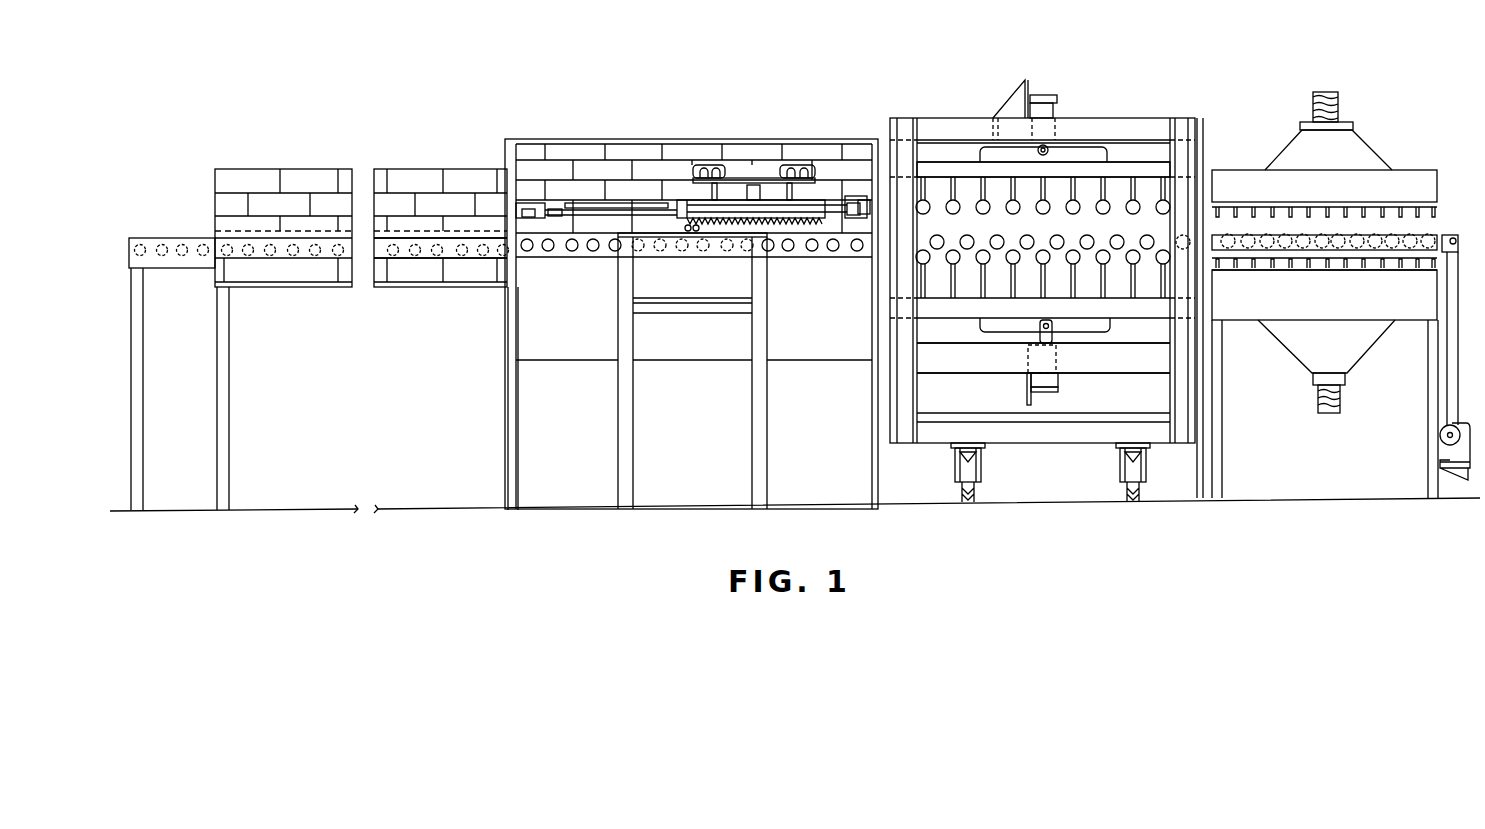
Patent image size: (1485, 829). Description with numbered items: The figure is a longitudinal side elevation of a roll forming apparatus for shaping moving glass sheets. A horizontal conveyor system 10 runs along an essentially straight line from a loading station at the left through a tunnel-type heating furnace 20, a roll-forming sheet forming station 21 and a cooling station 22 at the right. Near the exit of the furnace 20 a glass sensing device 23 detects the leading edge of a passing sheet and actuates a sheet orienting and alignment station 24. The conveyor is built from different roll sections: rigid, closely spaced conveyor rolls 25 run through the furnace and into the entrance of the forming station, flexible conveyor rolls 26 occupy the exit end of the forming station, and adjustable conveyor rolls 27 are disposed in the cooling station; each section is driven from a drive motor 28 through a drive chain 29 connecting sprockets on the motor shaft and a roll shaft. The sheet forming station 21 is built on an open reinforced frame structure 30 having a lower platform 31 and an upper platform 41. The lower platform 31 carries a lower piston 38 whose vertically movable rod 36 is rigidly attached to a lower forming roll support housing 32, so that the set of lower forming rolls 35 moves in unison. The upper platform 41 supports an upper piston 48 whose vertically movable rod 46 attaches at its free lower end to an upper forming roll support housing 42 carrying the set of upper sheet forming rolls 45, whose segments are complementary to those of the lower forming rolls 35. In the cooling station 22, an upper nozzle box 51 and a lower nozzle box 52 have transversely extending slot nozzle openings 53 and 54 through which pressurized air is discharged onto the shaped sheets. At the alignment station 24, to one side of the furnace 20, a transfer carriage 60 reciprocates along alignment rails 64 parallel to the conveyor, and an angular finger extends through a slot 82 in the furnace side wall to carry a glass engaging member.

The horizontal conveyor system 10 is at (139, 214).
The tunnel-type heating furnace 20 is at (395, 130).
The sheet forming station 21 is at (1038, 56).
The cooling station 22 is at (1285, 92).
The glass sensing device 23 is at (497, 256).
The sheet orienting and alignment station 24 is at (735, 110).
The conveyor rolls 25 is at (270, 258).
The conveyor rolls 26 is at (1122, 238).
The conveyor rolls 27 is at (1246, 234).
The drive motor 28 is at (1440, 449).
The drive chain 29 is at (1447, 355).
The open reinforced frame structure 30 is at (942, 458).
The lower platform 31 is at (1115, 358).
The lower forming roll support housing 32 is at (1118, 308).
The lower forming rolls 35 is at (1076, 240).
The vertically movable rod 36 is at (1040, 332).
The lower piston 38 is at (1056, 382).
The upper platform 41 is at (1107, 160).
The upper forming roll support housing 42 is at (1135, 175).
The upper sheet forming rolls 45 is at (1073, 214).
The vertically movable rod 46 is at (1048, 148).
The upper piston 48 is at (1045, 100).
The upper nozzle box 51 is at (1338, 198).
The lower nozzle box 52 is at (1298, 305).
The slot nozzle openings 53 is at (1436, 215).
The slot nozzle openings 54 is at (1405, 258).
The transfer carriage 60 is at (797, 240).
The alignment rails 64 is at (613, 212).
The slot 82 is at (838, 220).